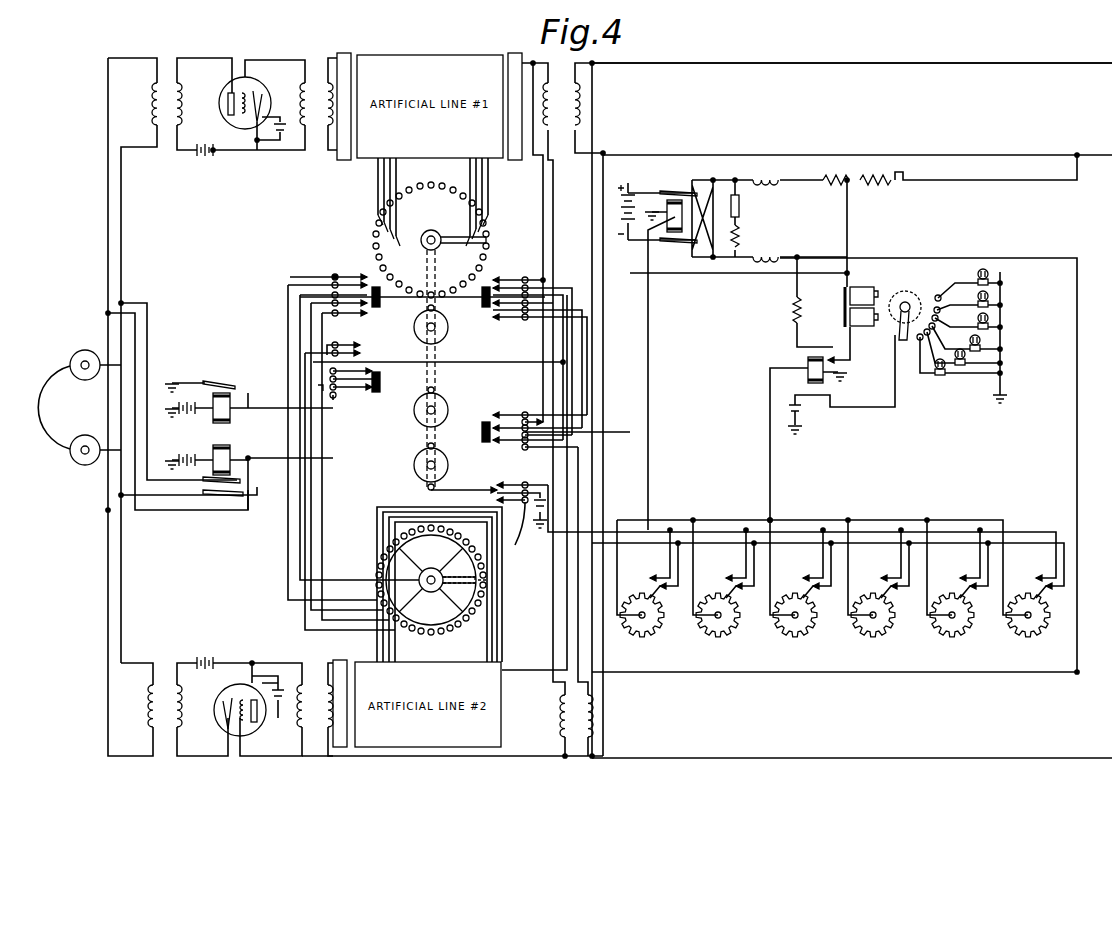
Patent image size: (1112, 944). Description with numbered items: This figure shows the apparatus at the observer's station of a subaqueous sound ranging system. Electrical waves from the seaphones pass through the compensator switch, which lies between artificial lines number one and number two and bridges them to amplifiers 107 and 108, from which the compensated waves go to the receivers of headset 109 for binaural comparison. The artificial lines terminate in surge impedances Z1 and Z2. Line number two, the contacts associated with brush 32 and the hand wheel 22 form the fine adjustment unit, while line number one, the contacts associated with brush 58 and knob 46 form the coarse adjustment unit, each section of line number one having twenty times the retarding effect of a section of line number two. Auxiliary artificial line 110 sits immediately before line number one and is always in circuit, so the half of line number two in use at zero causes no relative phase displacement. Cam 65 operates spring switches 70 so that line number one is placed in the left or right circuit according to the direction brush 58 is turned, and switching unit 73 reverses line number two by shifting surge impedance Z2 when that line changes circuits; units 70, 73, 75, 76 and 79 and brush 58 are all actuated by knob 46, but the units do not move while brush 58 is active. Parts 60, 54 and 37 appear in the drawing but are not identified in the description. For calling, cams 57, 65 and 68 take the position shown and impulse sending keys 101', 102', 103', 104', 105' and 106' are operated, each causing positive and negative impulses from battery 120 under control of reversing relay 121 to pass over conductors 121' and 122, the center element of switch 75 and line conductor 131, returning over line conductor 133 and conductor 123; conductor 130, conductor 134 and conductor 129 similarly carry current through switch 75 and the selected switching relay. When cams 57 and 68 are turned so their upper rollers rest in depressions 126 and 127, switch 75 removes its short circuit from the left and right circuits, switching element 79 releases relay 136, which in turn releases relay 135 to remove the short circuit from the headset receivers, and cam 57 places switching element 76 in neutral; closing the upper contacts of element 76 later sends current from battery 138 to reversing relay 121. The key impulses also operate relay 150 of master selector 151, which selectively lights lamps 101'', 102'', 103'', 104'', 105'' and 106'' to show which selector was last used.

The amplifier 107 is at (222, 393).
The amplifier 108 is at (375, 718).
The headset 109 is at (147, 406).
The auxiliary artificial line 110 is at (515, 55).
The surge impedance Z1 is at (337, 142).
The surge impedance Z2 is at (337, 690).
The contact dial 60 is at (452, 184).
The knob 46 is at (438, 232).
The contact brush 58 is at (470, 240).
The spring switches 70 is at (352, 285).
The switching unit 73 is at (356, 350).
The cam 65 is at (414, 327).
The switching element 79 is at (333, 400).
The relay 136 is at (222, 393).
The relay 135 is at (232, 460).
The cam 68 is at (414, 410).
The depression 127 is at (434, 390).
The shaft 54 is at (427, 437).
The switch 75 is at (484, 430).
The cam 57 is at (414, 465).
The depression 126 is at (434, 449).
The switching element 76 is at (515, 488).
The battery 138 is at (522, 534).
The hand wheel 22 is at (380, 566).
The brush 32 is at (465, 586).
The contacts 37 is at (458, 636).
The conductor 130 is at (895, 63).
The line conductor 131 is at (897, 155).
The conductor 129 is at (963, 180).
The battery 120 is at (612, 215).
The reversing relay 121 is at (681, 354).
The conductor 121' is at (811, 218).
The conductor 122 is at (847, 250).
The master selector 151 is at (845, 316).
The relay 150 is at (808, 365).
The conductor 123 is at (1062, 437).
The lamp 106'' is at (990, 285).
The lamp 105'' is at (990, 302).
The lamp 104'' is at (989, 322).
The lamp 103'' is at (987, 339).
The lamp 102'' is at (985, 353).
The lamp 101'' is at (959, 370).
The impulse sending key 101' is at (648, 592).
The impulse sending key 102' is at (723, 591).
The impulse sending key 103' is at (800, 591).
The impulse sending key 104' is at (878, 591).
The impulse sending key 105' is at (957, 591).
The impulse sending key 106' is at (1028, 628).
The line conductor 133 is at (840, 672).
The conductor 134 is at (878, 758).